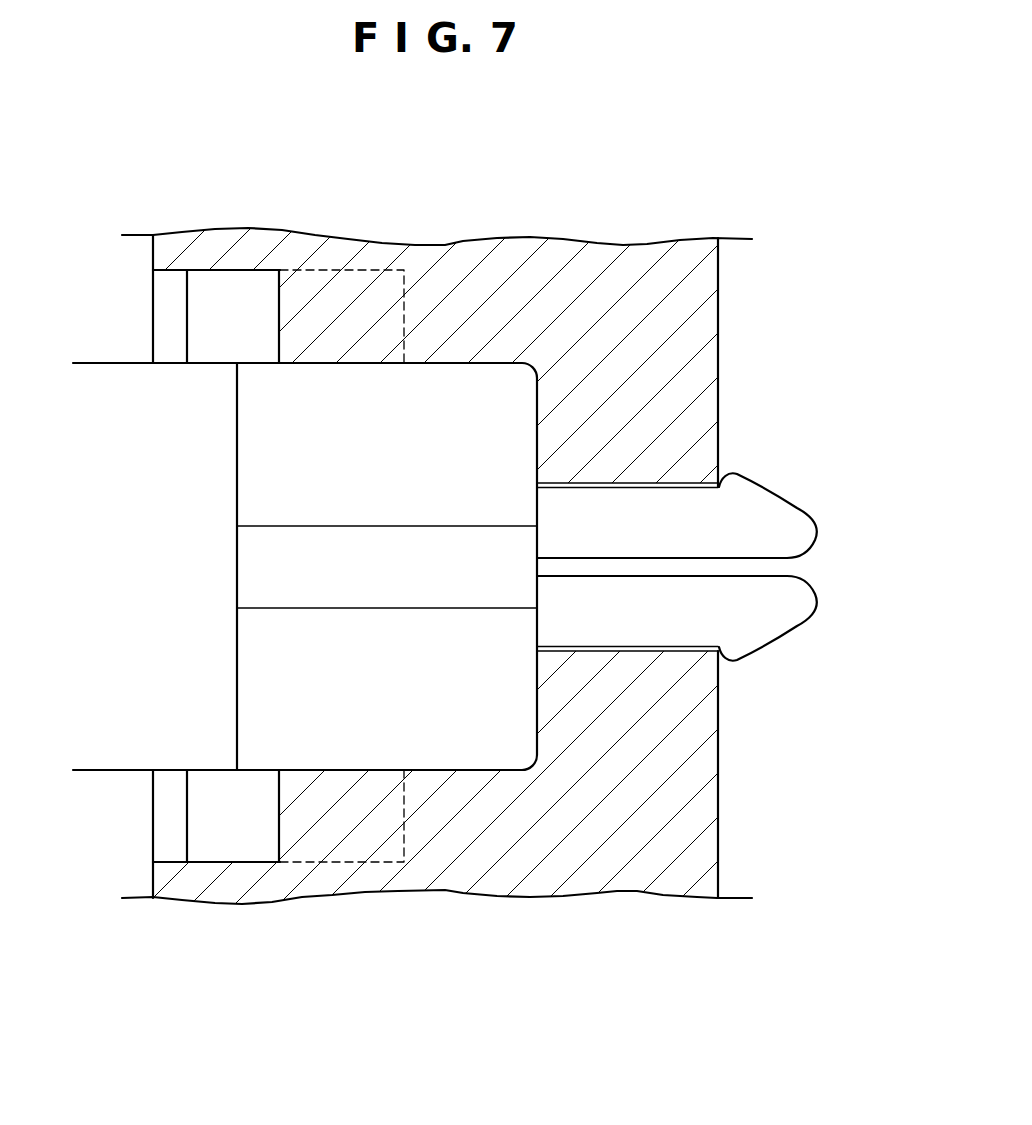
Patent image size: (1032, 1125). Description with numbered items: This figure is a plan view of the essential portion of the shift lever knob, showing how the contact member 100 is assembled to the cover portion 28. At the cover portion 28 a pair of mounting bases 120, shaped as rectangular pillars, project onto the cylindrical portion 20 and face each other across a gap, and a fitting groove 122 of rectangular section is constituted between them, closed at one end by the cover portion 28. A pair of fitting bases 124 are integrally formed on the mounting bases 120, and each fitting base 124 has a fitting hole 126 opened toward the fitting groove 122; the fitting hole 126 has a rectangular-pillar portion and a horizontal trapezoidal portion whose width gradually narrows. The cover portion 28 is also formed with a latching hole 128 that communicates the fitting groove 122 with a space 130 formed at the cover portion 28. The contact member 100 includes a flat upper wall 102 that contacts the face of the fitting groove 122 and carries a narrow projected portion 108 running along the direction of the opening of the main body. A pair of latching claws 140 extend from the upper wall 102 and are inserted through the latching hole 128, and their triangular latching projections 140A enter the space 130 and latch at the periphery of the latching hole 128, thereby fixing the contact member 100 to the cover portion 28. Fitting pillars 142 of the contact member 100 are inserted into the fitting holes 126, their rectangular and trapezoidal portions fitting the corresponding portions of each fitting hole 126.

The cylindrical portion 20 is at (83, 573).
The cover portion 28 is at (720, 321).
The contact member 100 is at (236, 460).
The upper wall 102 is at (245, 675).
The projected portion 108 is at (378, 542).
The mounting base 120 is at (98, 347).
The fitting groove 122 is at (442, 364).
The fitting base 124 is at (152, 250).
The fitting hole 126 is at (232, 271).
The latching hole 128 is at (663, 490).
The space 130 is at (882, 398).
The latching claw 140 is at (545, 510).
The latching projection 140A is at (800, 507).
The fitting pillar 142 is at (152, 305).